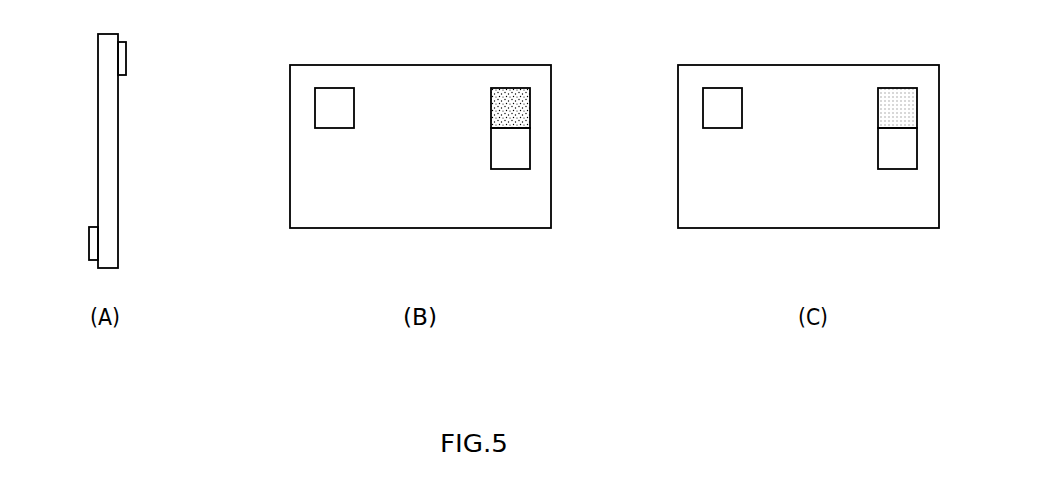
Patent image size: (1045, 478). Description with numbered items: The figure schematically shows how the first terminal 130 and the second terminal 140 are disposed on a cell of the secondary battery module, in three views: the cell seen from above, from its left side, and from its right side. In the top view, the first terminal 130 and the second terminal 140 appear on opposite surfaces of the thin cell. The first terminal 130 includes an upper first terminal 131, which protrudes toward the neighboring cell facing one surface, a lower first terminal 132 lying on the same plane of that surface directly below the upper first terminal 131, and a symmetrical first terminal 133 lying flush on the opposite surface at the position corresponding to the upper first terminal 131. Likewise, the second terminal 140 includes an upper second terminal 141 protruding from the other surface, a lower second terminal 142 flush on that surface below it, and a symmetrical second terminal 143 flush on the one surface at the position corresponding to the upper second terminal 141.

The first terminal 130 is at (90, 241).
The upper first terminal 131 is at (508, 105).
The lower first terminal 132 is at (510, 148).
The symmetrical first terminal 133 is at (722, 108).
The second terminal 140 is at (122, 57).
The upper second terminal 141 is at (897, 105).
The lower second terminal 142 is at (898, 148).
The symmetrical second terminal 143 is at (333, 108).